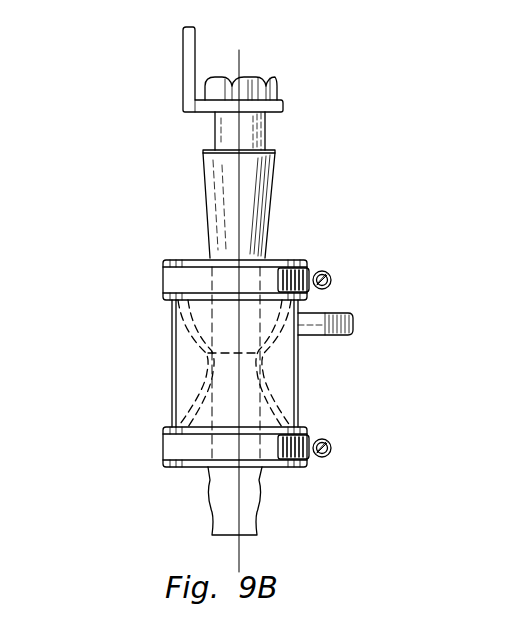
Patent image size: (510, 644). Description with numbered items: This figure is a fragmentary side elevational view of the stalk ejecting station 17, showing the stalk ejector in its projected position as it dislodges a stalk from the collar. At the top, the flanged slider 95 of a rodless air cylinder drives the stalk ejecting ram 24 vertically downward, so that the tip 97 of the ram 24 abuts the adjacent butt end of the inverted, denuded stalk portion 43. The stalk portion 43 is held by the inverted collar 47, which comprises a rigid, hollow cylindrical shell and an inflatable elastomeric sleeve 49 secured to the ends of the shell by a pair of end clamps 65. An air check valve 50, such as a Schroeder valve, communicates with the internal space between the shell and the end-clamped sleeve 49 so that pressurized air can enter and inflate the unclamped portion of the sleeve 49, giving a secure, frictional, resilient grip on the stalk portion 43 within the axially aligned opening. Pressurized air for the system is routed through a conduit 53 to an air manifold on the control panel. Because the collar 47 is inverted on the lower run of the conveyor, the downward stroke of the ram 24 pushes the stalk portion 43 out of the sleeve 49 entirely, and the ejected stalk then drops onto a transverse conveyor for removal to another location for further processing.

The stalk ejecting station 17 is at (138, 259).
The stalk ejecting ram 24 is at (270, 200).
The stalk portion 43 is at (210, 492).
The collar 47 is at (333, 261).
The inflatable elastomeric sleeve 49 is at (202, 378).
The air check valve 50 is at (355, 333).
The conduit 53 is at (237, 557).
The end clamps 65 is at (312, 289).
The flanged slider 95 is at (300, 101).
The tip of the ram 97 is at (290, 372).